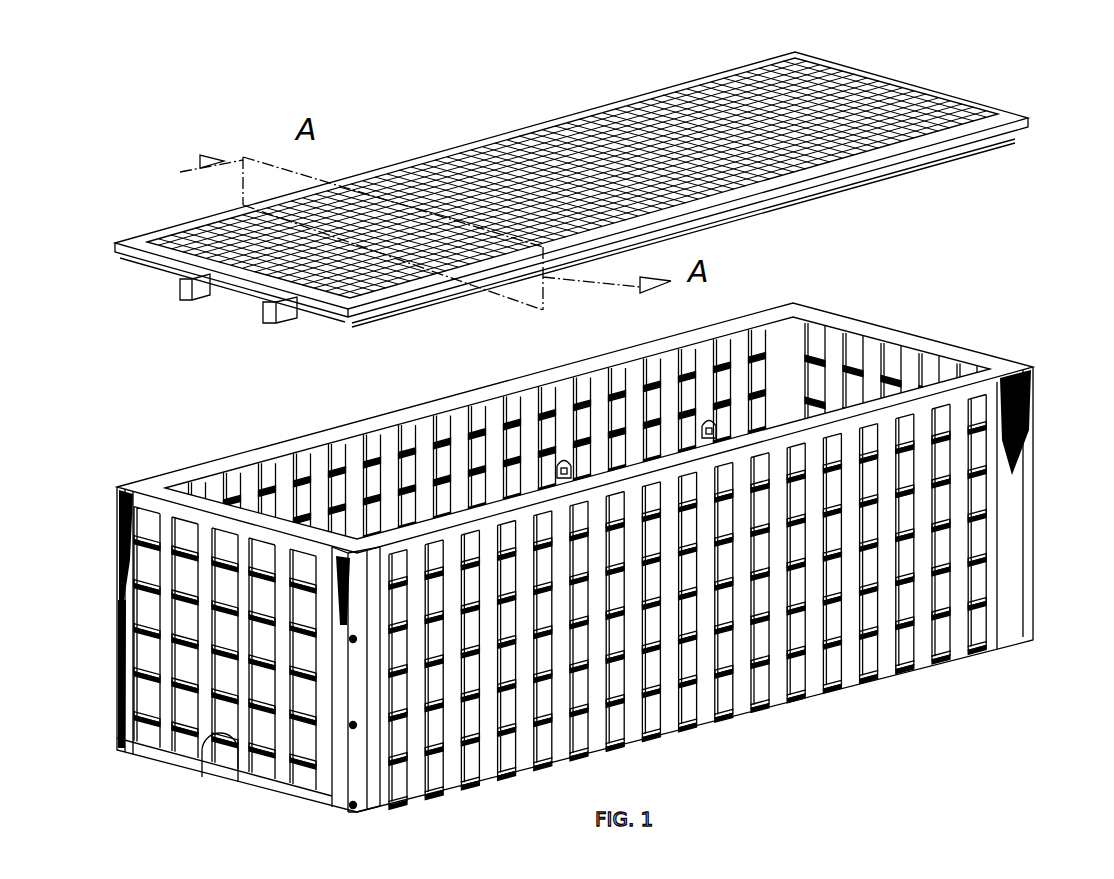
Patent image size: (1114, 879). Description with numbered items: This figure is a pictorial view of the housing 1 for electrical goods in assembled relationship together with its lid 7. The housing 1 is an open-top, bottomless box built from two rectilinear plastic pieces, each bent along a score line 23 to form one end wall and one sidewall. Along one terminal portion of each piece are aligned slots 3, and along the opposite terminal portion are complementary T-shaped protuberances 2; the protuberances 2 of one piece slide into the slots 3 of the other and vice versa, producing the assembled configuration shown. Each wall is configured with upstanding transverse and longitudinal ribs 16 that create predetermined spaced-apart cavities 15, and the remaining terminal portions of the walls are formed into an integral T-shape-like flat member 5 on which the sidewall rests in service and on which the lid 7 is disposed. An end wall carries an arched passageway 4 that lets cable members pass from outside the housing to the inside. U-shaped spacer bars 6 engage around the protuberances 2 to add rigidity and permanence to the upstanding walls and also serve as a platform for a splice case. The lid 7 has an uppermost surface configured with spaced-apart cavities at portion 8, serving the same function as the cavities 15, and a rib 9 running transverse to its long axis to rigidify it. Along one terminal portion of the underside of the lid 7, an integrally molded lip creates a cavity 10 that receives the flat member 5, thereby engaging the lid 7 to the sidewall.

The housing 1 is at (1028, 488).
The T-shaped protuberances 2 is at (375, 812).
The slots 3 is at (348, 810).
The arched passageway 4 is at (232, 778).
The T-shape-like flat member 5 is at (918, 338).
The spacer bars 6 is at (707, 428).
The lid 7 is at (576, 112).
The spaced-apart cavities of the lid 8 is at (888, 113).
The rib 9 is at (297, 316).
The cavity 10 is at (932, 152).
The cavities 15 is at (827, 672).
The ribs 16 is at (772, 687).
The score line 23 is at (1040, 370).